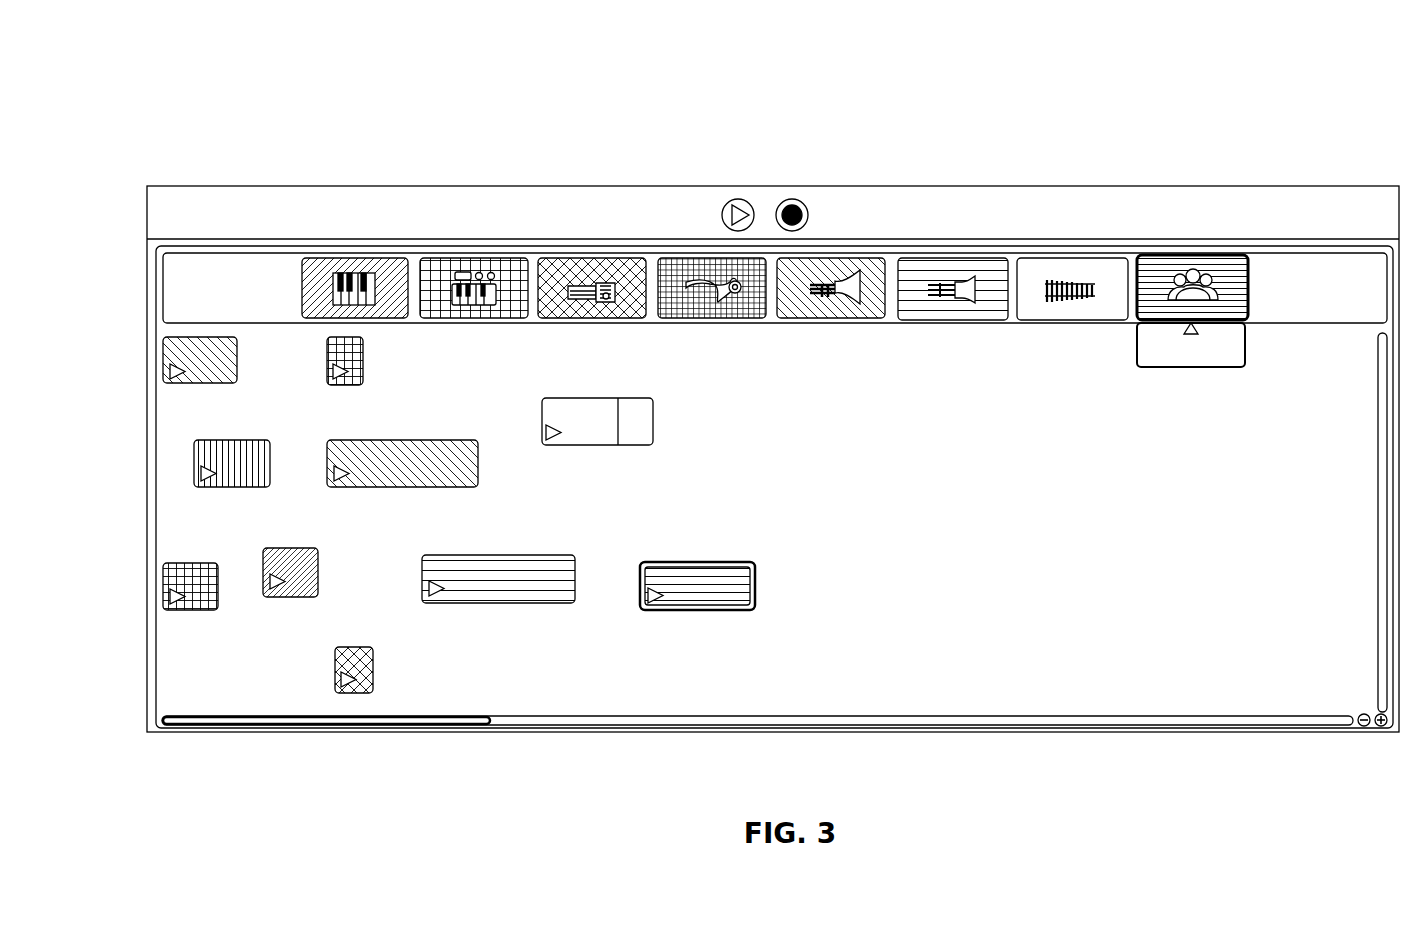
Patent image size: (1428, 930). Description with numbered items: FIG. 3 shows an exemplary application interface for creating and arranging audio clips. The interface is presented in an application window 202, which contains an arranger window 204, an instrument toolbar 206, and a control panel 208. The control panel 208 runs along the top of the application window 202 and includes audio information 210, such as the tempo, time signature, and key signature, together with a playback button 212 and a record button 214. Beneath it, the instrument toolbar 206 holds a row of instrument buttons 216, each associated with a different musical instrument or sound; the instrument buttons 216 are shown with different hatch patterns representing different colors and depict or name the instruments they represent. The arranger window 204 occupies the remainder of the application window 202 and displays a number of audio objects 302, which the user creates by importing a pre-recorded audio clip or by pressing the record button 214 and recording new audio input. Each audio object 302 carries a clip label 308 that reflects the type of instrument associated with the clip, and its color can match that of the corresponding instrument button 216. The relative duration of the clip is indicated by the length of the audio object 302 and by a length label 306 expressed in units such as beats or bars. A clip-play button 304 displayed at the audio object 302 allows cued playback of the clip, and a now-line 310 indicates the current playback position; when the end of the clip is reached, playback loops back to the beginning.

The application window 202 is at (466, 62).
The arranger window 204 is at (172, 428).
The instrument toolbar 206 is at (175, 293).
The control panel 208 is at (745, 186).
The audio information 210 is at (395, 204).
The playback button 212 is at (724, 205).
The record button 214 is at (783, 201).
The instrument buttons 216 is at (302, 288).
The audio object 302 is at (542, 398).
The clip-play button 304 is at (545, 436).
The length label 306 is at (574, 440).
The clip label 308 is at (590, 407).
The now-line 310 is at (619, 435).